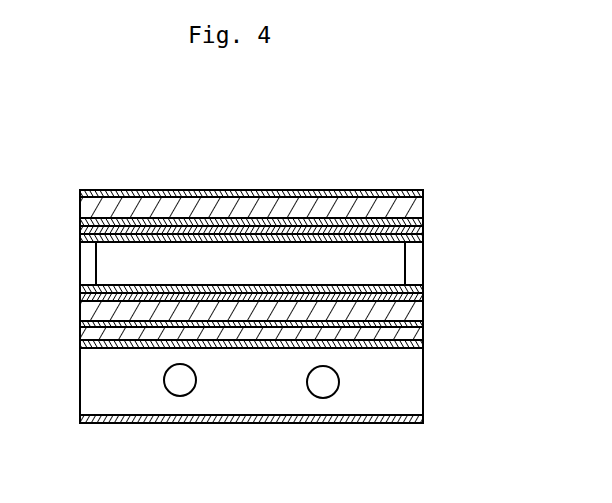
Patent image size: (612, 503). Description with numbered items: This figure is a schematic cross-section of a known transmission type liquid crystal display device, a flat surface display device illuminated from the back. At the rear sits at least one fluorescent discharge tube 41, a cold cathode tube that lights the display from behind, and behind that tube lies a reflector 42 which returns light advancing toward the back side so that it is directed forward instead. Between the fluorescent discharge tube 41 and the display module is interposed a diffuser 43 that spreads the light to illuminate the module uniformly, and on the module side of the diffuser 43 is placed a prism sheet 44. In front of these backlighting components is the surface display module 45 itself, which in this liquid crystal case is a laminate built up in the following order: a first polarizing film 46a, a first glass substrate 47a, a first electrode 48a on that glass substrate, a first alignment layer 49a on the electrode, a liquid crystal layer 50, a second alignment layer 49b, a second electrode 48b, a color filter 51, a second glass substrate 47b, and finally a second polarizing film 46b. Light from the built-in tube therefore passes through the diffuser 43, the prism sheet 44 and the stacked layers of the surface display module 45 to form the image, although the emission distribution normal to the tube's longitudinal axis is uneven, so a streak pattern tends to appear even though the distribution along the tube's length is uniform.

The fluorescent discharge tube 41 is at (178, 396).
The reflector 42 is at (211, 425).
The diffuser 43 is at (248, 351).
The prism sheet 44 is at (370, 351).
The surface display module 45 is at (53, 190).
The first polarizing film 46a is at (424, 330).
The second polarizing film 46b is at (365, 200).
The first glass substrate 47a is at (411, 314).
The second glass substrate 47b is at (300, 210).
The first electrode 48a is at (426, 299).
The second electrode 48b is at (198, 221).
The first alignment layer 49a is at (426, 280).
The second alignment layer 49b is at (172, 237).
The liquid crystal layer 50 is at (401, 268).
The color filter 51 is at (241, 212).